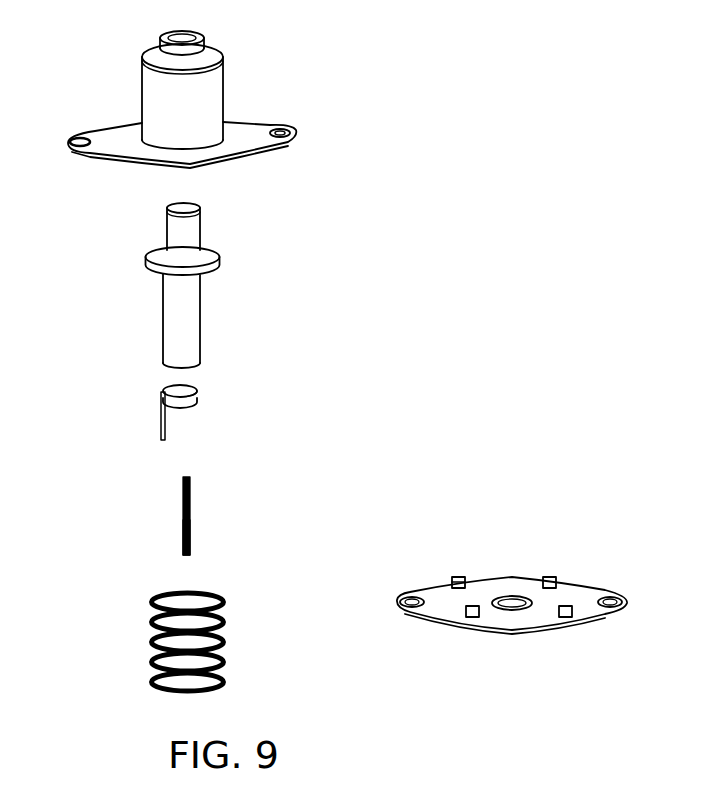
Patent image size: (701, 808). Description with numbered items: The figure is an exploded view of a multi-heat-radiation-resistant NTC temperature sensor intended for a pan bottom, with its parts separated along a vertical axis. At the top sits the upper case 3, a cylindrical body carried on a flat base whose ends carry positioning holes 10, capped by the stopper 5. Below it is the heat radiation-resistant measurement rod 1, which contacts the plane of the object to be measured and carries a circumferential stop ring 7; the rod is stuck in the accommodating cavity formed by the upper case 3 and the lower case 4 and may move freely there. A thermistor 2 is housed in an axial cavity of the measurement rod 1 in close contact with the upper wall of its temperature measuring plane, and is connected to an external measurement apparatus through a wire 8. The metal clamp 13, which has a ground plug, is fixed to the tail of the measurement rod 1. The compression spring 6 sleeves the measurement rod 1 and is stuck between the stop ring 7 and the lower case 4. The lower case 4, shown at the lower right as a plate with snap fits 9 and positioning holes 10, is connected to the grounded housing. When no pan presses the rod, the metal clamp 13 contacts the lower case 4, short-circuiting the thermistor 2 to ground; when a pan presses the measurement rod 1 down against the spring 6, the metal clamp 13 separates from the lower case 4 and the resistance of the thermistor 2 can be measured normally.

The measurement rod 1 is at (190, 205).
The thermistor 2 is at (183, 479).
The upper case 3 is at (226, 79).
The lower case 4 is at (592, 616).
The stopper 5 is at (163, 45).
The compression spring 6 is at (158, 593).
The stop ring 7 is at (218, 255).
The wire 8 is at (191, 527).
The snap fits 9 is at (455, 580).
The positioning holes 10 is at (90, 138).
The metal clamp 13 is at (158, 403).